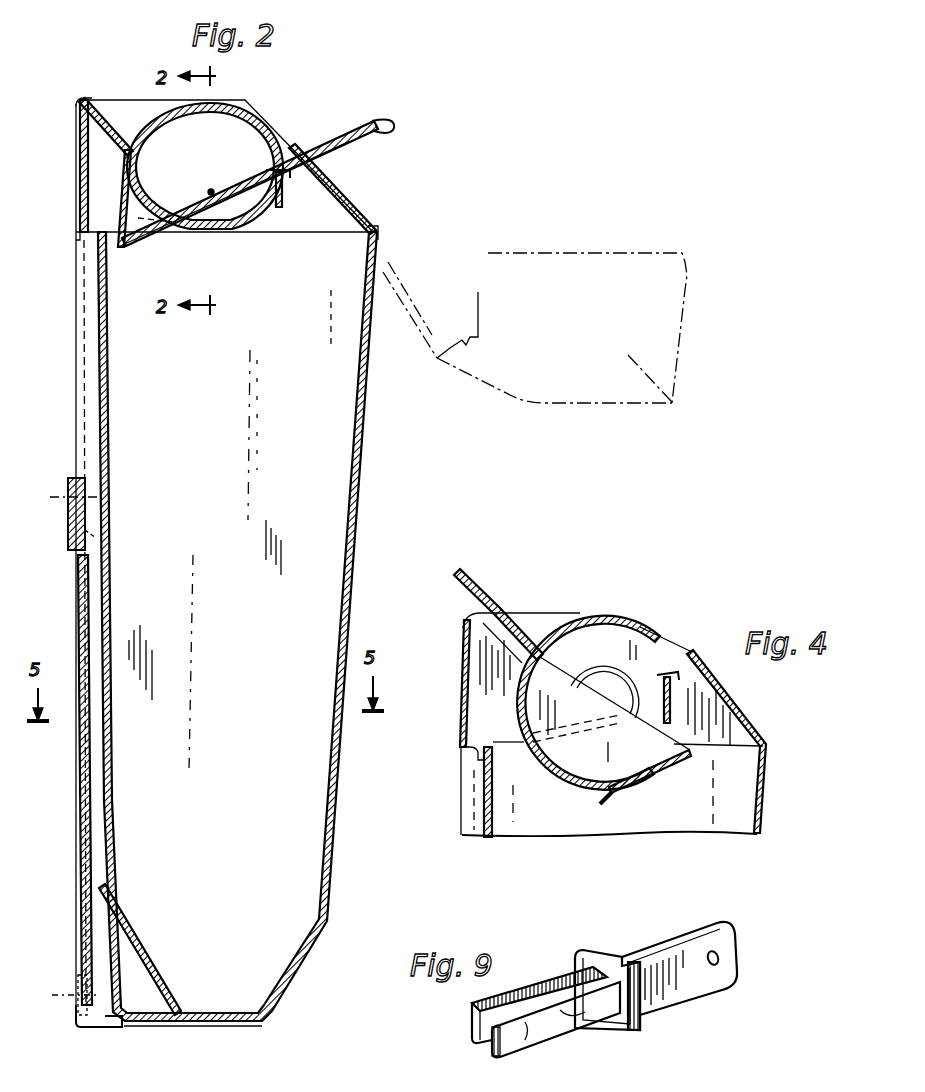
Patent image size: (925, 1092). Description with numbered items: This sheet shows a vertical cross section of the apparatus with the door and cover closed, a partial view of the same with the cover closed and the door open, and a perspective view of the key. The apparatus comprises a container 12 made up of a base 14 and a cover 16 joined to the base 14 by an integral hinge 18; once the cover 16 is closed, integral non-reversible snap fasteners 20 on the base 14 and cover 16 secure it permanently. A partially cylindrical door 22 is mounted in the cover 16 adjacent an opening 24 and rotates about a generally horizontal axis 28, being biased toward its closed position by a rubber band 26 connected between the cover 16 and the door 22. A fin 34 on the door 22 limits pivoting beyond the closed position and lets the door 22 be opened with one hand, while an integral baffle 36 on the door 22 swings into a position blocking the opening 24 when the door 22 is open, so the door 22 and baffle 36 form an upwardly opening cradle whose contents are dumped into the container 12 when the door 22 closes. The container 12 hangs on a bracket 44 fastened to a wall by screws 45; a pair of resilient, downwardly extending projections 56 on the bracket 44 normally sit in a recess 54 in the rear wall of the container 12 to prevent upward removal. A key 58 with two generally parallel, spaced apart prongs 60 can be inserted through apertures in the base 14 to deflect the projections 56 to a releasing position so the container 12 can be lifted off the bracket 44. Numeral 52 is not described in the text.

In FIG. 2, the container 12 is at (360, 518).
In FIG. 2, the base 14 is at (350, 574).
In FIG. 2, the cover 16 is at (105, 98).
In FIG. 2, the integral hinge 18 is at (380, 232).
In FIG. 2, the snap fasteners 20 is at (70, 240).
In FIG. 2, the door 22 is at (240, 108).
In FIG. 4, the door 22 is at (578, 798).
In FIG. 2, the opening 24 is at (270, 195).
In FIG. 4, the opening 24 is at (660, 683).
In FIG. 2, the rubber band 26 is at (190, 236).
In FIG. 4, the rubber band 26 is at (568, 680).
In FIG. 2, the horizontal axis 28 is at (212, 190).
In FIG. 2, the fin 34 is at (370, 124).
In FIG. 4, the fin 34 is at (470, 578).
In FIG. 2, the baffle 36 is at (140, 245).
In FIG. 4, the baffle 36 is at (686, 764).
In FIG. 2, the bracket 44 is at (82, 586).
In FIG. 2, the screws 45 is at (105, 498).
In FIG. 2, the bottom foot 52 is at (98, 1030).
In FIG. 2, the recess 54 is at (160, 1024).
In FIG. 2, the projections 56 is at (125, 948).
In FIG. 9, the key 58 is at (684, 922).
In FIG. 9, the prongs 60 is at (496, 1038).